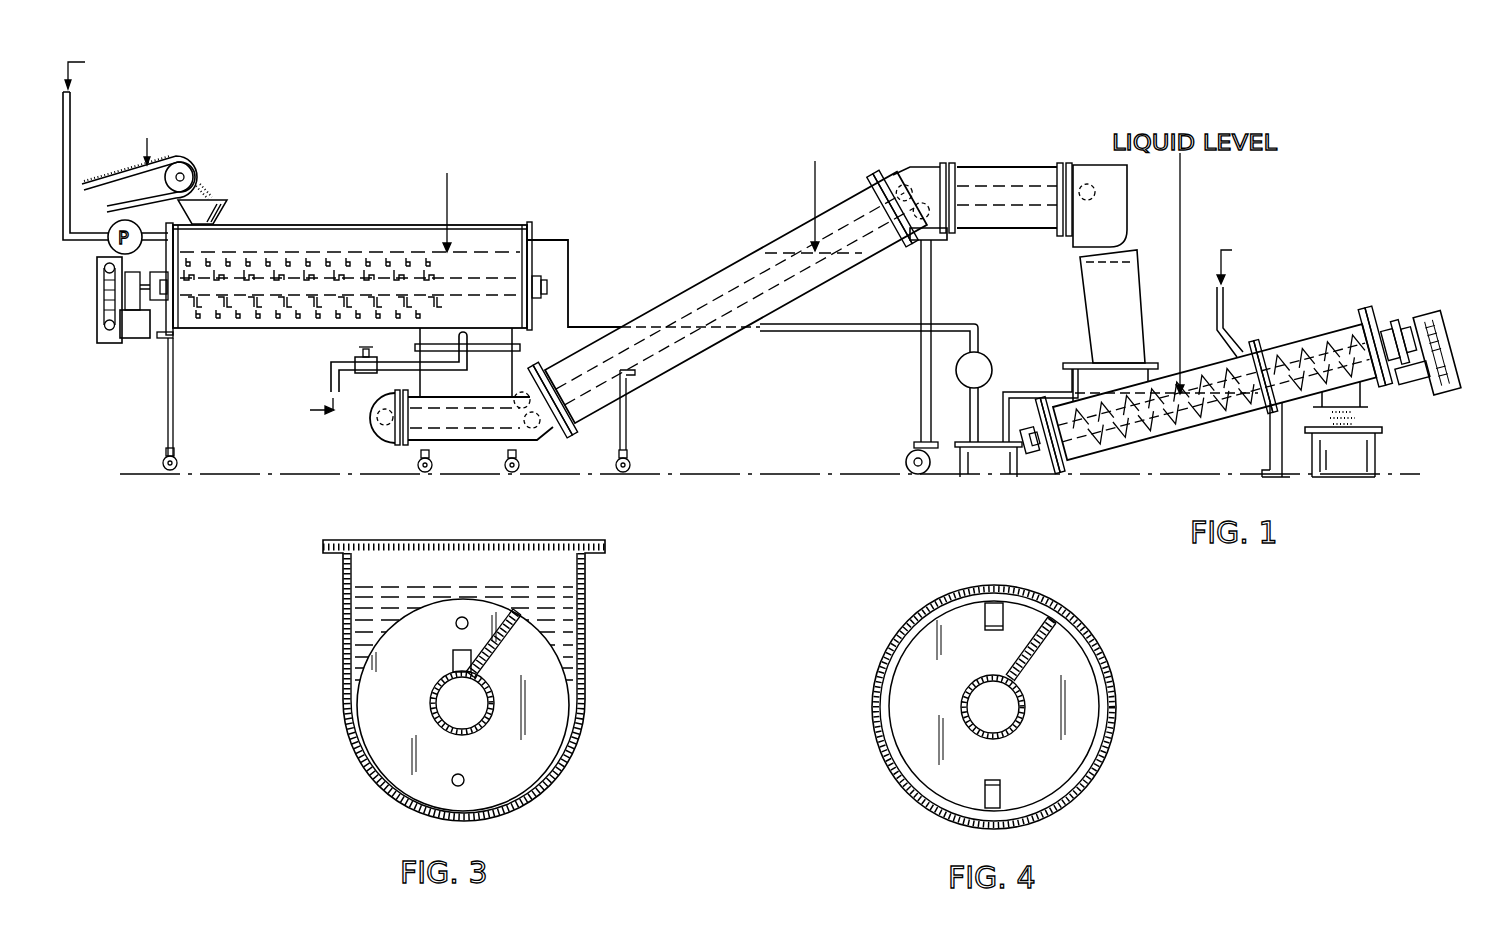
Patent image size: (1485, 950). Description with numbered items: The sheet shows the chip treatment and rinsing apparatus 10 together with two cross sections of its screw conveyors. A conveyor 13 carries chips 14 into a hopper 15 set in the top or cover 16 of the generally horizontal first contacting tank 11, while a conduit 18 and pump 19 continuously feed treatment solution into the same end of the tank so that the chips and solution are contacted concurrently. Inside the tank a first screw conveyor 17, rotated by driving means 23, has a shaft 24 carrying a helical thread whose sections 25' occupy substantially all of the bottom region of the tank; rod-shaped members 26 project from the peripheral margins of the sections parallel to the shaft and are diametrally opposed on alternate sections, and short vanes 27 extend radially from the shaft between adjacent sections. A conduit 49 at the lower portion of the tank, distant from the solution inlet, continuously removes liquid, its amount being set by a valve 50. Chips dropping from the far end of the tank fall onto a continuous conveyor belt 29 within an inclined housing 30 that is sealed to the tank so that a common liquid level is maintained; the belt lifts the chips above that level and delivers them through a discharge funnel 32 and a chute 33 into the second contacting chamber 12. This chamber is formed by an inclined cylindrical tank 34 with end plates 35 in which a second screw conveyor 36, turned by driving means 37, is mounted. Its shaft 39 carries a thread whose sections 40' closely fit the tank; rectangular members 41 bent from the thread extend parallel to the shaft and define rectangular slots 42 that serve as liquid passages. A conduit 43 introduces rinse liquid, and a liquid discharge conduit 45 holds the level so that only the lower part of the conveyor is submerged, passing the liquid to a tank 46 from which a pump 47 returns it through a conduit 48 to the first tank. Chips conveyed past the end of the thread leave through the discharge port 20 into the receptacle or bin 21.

In FIG. 1, the apparatus 10 is at (380, 242).
In FIG. 1, the first contacting tank 11 is at (233, 330).
In FIG. 3, the first contacting tank 11 is at (583, 720).
In FIG. 1, the second contacting chamber 12 is at (1315, 330).
In FIG. 1, the conveyor 13 is at (135, 183).
In FIG. 1, the chips 14 is at (203, 190).
In FIG. 1, the hopper 15 is at (226, 220).
In FIG. 1, the top or cover 16 is at (284, 226).
In FIG. 3, the top or cover 16 is at (520, 540).
In FIG. 1, the first screw conveyor 17 is at (330, 258).
In FIG. 1, the conduit 18 is at (103, 245).
In FIG. 1, the pump 19 is at (100, 276).
In FIG. 1, the discharge port 20 is at (1363, 395).
In FIG. 1, the receptacle or bin 21 is at (1378, 468).
In FIG. 1, the driving means 23 is at (130, 340).
In FIG. 3, the shaft 24 is at (430, 715).
In FIG. 3, the sections of thread 25' is at (489, 705).
In FIG. 3, the rod-shaped members 26 is at (455, 625).
In FIG. 3, the vanes 27 is at (452, 660).
In FIG. 1, the continuous conveyor belt 29 is at (728, 288).
In FIG. 1, the housing 30 is at (683, 362).
In FIG. 1, the discharge funnel 32 is at (1118, 212).
In FIG. 1, the chute 33 is at (1082, 280).
In FIG. 1, the cylindrical tank 34 is at (1240, 360).
In FIG. 1, the end plates 35 is at (1372, 322).
In FIG. 1, the second screw conveyor 36 is at (1200, 420).
In FIG. 1, the driving means 37 is at (1415, 400).
In FIG. 4, the shaft 39 is at (1026, 710).
In FIG. 4, the sections of thread 40' is at (1035, 707).
In FIG. 4, the rectangular members 41 is at (975, 632).
In FIG. 4, the rectangular slots 42 is at (1005, 612).
In FIG. 1, the conduit 43 is at (1225, 302).
In FIG. 1, the liquid discharge conduit 45 is at (1037, 392).
In FIG. 1, the tank 46 is at (952, 470).
In FIG. 1, the pump 47 is at (985, 354).
In FIG. 1, the conduit 48 is at (855, 322).
In FIG. 1, the conduit 49 is at (333, 380).
In FIG. 1, the valve 50 is at (365, 348).